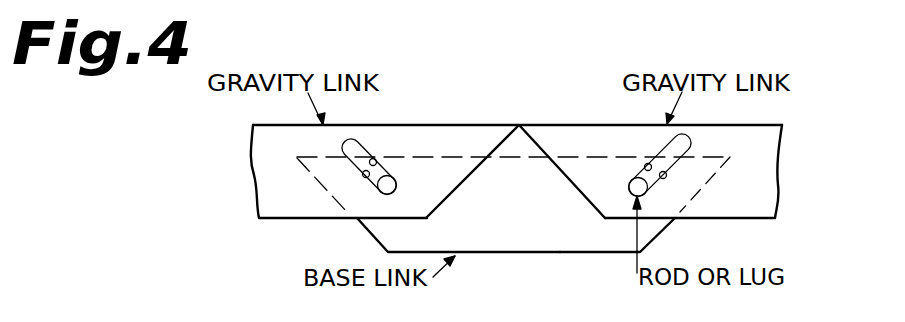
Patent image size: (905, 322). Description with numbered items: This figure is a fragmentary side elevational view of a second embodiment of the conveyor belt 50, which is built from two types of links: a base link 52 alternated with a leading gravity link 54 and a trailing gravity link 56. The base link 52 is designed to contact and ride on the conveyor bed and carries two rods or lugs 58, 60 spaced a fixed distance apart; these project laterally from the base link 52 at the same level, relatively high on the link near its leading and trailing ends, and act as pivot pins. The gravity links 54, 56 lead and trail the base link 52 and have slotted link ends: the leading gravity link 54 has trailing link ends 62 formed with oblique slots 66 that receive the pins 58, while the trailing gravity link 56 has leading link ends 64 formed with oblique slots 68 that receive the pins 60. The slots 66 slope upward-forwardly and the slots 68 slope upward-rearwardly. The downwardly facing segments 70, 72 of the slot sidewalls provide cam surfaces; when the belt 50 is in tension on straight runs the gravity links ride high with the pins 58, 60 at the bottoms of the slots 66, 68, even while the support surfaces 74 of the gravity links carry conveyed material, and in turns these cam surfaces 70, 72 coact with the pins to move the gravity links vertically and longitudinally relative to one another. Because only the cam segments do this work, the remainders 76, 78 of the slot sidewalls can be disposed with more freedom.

The conveyor belt 50 is at (520, 260).
The base link 52 is at (593, 243).
The leading gravity link 54 is at (763, 187).
The trailing gravity link 56 is at (267, 200).
The rod or lug 58 is at (629, 184).
The rod or lug 60 is at (396, 186).
The trailing link end 62 is at (586, 196).
The leading link end 64 is at (418, 207).
The oblique slot 66 is at (684, 139).
The oblique slot 68 is at (356, 140).
The downwardly facing segment 70 is at (646, 164).
The downwardly facing segment 72 is at (376, 163).
The support surface 74 is at (512, 155).
The remainder of slot sidewall 76 is at (665, 177).
The remainder of slot sidewall 78 is at (364, 177).